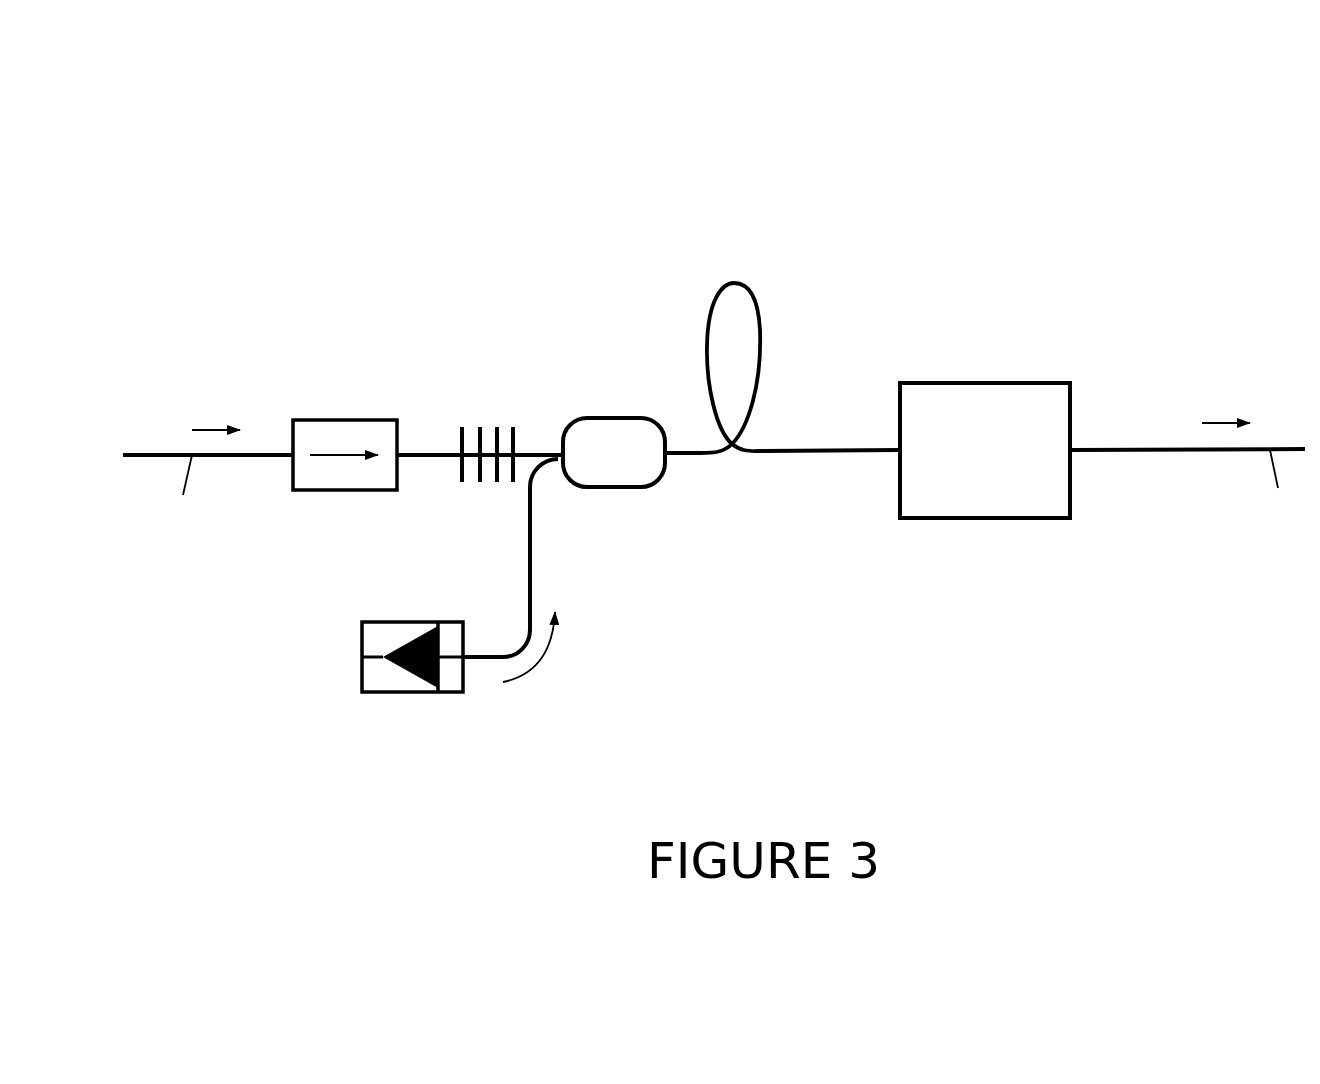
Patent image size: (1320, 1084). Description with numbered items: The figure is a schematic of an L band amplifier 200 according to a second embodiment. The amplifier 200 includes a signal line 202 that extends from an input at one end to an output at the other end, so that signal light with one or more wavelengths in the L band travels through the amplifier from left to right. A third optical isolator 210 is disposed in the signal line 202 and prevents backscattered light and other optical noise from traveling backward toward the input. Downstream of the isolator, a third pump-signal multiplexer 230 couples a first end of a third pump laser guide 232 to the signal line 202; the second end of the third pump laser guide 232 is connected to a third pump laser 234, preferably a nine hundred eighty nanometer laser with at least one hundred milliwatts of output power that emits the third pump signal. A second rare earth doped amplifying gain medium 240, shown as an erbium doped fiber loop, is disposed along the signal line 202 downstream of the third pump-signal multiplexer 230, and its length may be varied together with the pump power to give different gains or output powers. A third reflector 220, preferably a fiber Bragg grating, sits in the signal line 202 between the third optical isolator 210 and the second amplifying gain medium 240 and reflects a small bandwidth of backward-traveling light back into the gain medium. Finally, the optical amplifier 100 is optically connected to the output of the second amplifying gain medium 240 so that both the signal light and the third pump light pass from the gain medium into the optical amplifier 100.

The L band amplifier 200 is at (648, 250).
The signal line 202 is at (262, 455).
The third optical isolator 210 is at (327, 420).
The third reflector 220 is at (480, 420).
The third pump-signal multiplexer 230 is at (600, 418).
The third pump laser guide 232 is at (530, 522).
The third pump laser 234 is at (395, 693).
The second rare earth doped amplifying gain medium 240 is at (760, 318).
The optical amplifier 100 is at (985, 450).